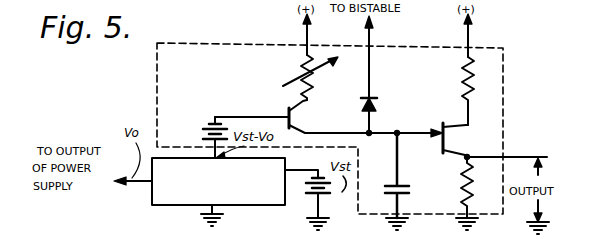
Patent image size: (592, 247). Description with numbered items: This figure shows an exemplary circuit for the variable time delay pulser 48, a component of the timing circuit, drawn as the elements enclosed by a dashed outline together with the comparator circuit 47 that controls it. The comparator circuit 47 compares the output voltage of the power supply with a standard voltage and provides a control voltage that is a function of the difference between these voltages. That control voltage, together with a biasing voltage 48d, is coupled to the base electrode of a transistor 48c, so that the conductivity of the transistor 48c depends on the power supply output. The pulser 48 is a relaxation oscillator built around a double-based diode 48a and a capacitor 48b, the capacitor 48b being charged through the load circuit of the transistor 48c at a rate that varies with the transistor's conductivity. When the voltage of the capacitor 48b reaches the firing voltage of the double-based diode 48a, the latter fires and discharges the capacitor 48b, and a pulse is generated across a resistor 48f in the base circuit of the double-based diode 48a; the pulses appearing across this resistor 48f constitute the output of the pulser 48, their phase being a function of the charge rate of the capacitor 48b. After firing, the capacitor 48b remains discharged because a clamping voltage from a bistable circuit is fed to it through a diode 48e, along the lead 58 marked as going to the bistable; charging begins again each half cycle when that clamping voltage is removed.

The comparator circuit 47 is at (152, 204).
The variable time delay pulser 48 is at (510, 47).
The double-based diode 48a is at (459, 125).
The capacitor 48b is at (394, 183).
The transistor 48c is at (293, 108).
The biasing voltage 48d is at (200, 130).
The diode 48e is at (377, 107).
The resistor 48f is at (462, 183).
The lead to bistable 58 is at (372, 67).